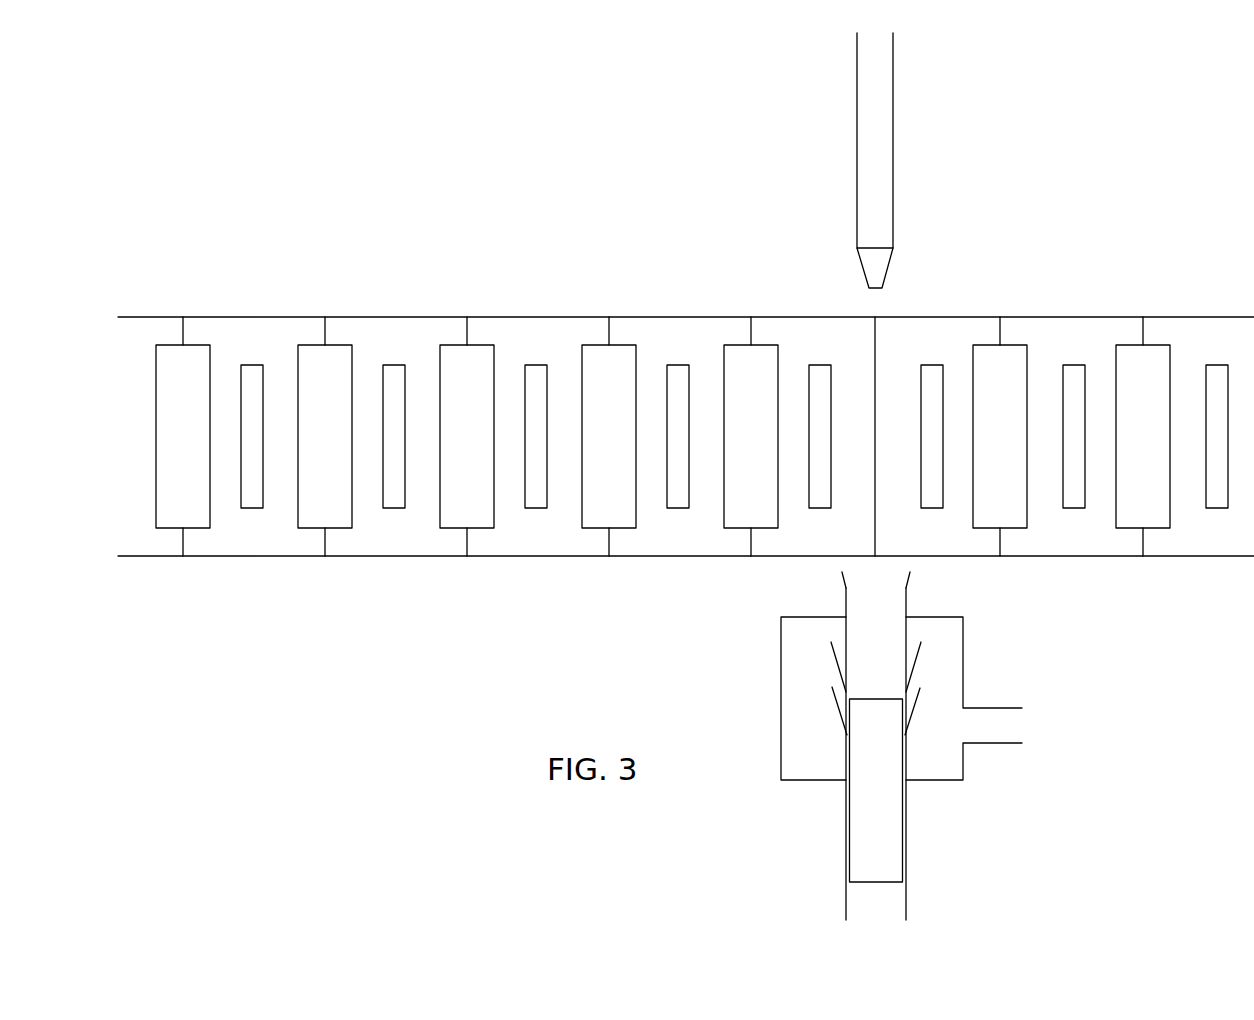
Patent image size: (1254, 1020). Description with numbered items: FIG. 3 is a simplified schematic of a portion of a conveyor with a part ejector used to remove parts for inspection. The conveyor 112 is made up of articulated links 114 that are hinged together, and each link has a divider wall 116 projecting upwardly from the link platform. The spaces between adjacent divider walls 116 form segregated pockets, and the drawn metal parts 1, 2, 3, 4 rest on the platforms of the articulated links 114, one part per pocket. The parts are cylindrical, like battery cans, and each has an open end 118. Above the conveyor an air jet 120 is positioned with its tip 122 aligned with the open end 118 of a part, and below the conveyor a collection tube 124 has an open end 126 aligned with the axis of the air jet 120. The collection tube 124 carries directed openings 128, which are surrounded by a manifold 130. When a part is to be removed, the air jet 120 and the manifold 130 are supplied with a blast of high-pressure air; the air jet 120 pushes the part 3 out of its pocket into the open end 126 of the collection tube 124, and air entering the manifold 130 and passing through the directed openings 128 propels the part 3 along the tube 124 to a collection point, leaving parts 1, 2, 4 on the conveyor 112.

The part 1 is at (622, 515).
The part 2 is at (482, 516).
The part 3 is at (338, 516).
The part 4 is at (200, 516).
The conveyor 112 is at (575, 288).
The articulated link 114 is at (342, 317).
The divider wall 116 is at (406, 390).
The open end 118 is at (731, 345).
The air jet 120 is at (893, 152).
The tip 122 is at (890, 260).
The collection tube 124 is at (907, 895).
The open end 126 is at (909, 590).
The directed openings 128 is at (846, 695).
The manifold 130 is at (963, 643).